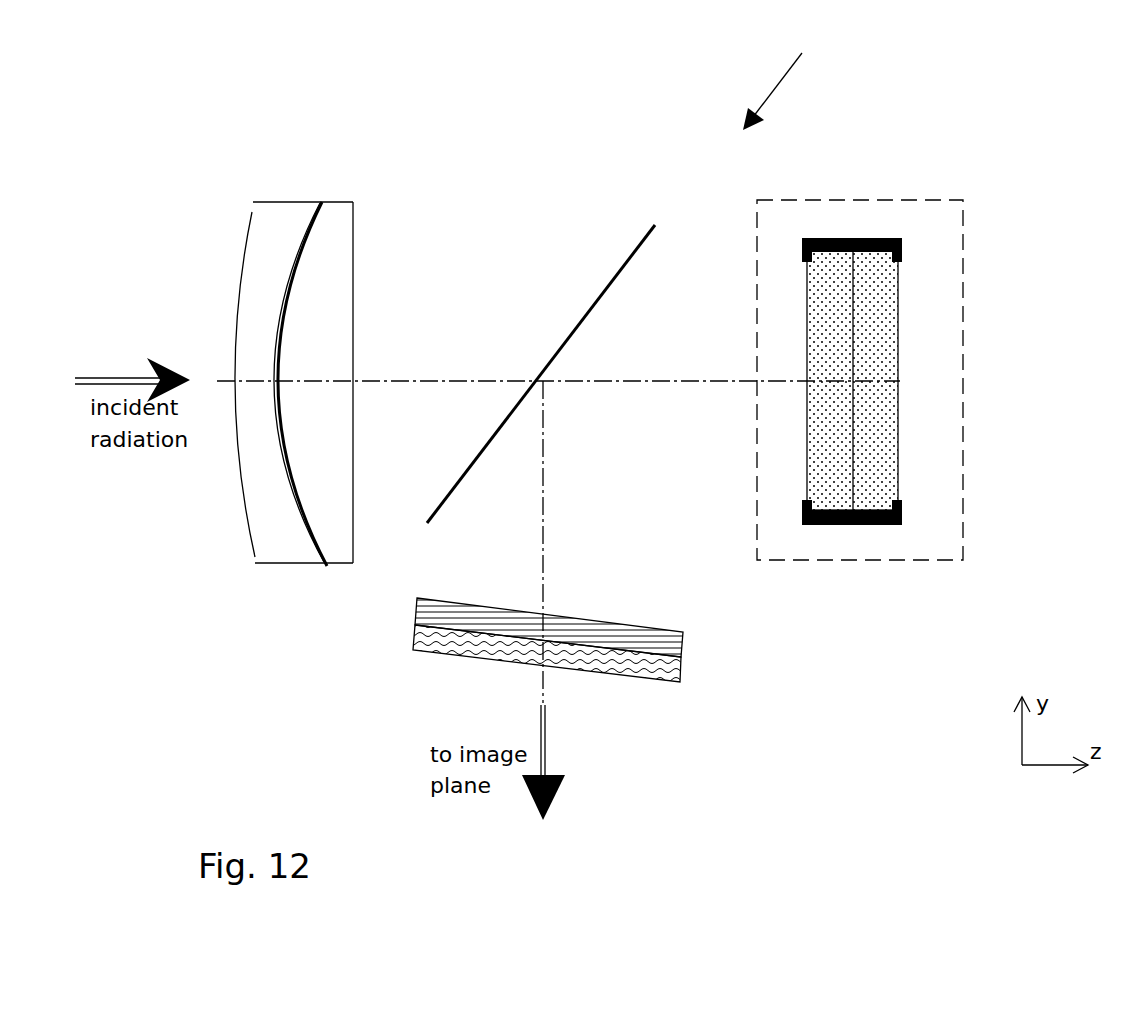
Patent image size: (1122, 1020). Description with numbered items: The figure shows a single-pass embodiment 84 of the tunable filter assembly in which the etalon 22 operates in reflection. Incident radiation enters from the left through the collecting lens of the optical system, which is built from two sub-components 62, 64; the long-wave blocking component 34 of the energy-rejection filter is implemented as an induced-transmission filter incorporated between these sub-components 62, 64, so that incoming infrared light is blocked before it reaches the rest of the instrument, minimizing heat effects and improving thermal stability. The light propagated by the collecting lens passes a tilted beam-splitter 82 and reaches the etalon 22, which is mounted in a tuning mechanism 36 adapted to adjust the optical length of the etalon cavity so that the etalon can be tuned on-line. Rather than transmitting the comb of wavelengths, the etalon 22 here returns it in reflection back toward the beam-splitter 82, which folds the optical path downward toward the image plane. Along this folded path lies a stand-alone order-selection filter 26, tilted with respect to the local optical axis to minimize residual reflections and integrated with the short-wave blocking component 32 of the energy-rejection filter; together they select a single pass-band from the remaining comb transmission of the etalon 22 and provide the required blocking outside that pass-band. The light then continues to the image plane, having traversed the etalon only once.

The tunable etalon filter 22 is at (878, 305).
The order-selection filter 26 is at (673, 638).
The short-wave blocking component 32 is at (667, 682).
The long-wave blocking component 34 is at (277, 327).
The tuning mechanism 36 is at (868, 562).
The collecting lens sub-component 62 is at (278, 537).
The collecting lens sub-component 64 is at (332, 240).
The beam-splitter 82 is at (630, 250).
The single-pass embodiment 84 is at (796, 81).